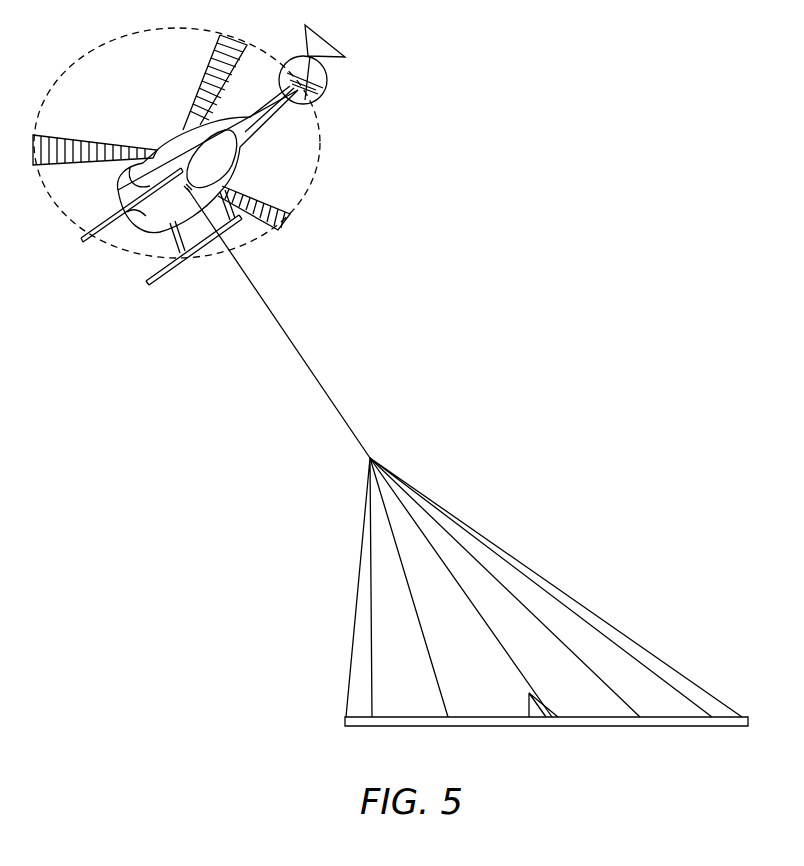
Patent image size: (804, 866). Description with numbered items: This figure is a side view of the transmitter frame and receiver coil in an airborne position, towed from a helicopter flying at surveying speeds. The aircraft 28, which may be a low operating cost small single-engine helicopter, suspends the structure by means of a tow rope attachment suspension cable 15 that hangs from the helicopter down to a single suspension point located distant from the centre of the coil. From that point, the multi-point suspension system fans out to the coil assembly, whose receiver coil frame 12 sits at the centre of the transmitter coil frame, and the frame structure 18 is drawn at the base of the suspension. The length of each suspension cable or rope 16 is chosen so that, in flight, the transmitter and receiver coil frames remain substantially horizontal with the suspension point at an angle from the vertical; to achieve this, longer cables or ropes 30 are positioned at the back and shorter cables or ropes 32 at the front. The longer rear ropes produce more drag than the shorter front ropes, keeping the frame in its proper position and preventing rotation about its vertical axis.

The aircraft 28 is at (340, 120).
The tow rope attachment suspension cable 15 is at (312, 372).
The suspension cable or rope 16 is at (542, 573).
The longer cables or ropes 30 is at (567, 643).
The shorter cables or ropes 32 is at (383, 546).
The receiver coil frame 12 is at (548, 727).
The bottom bar 18 is at (617, 727).